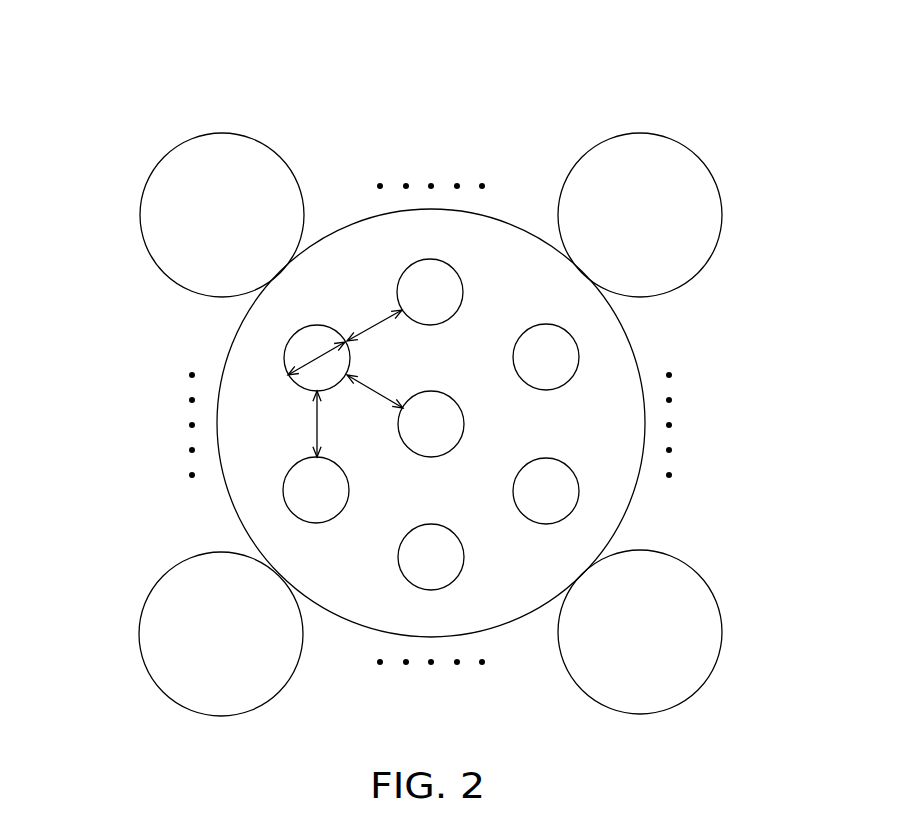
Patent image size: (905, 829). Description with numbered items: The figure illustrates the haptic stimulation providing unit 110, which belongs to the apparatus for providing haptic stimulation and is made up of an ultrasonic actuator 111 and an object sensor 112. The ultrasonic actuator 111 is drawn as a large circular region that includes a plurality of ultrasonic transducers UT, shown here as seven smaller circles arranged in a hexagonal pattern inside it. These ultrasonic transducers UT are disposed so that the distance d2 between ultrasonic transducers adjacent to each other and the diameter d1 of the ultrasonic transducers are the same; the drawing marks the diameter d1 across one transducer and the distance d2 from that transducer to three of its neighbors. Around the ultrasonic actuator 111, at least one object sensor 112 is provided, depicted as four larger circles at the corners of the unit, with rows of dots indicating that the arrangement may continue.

The haptic stimulation providing unit 110 is at (439, 97).
The ultrasonic actuator 111 is at (623, 351).
The object sensor 112 is at (698, 178).
The ultrasonic transducers UT is at (407, 274).
The diameter of the ultrasonic transducers d1 is at (316, 354).
The distance between ultrasonic transducers adjacent to each other d2 is at (358, 377).